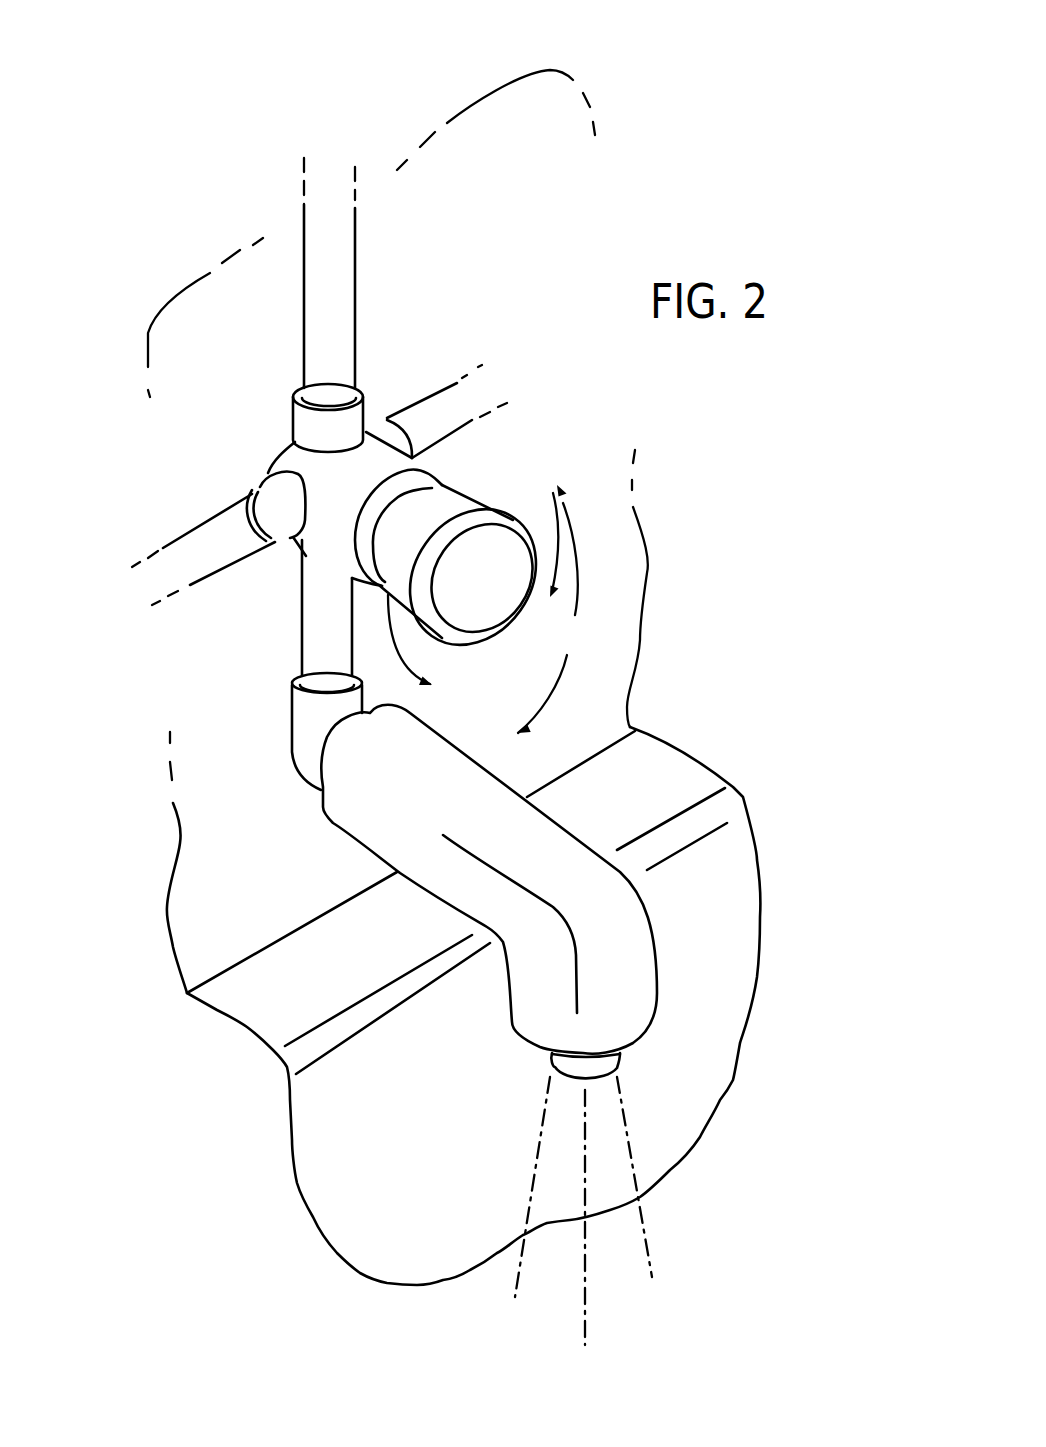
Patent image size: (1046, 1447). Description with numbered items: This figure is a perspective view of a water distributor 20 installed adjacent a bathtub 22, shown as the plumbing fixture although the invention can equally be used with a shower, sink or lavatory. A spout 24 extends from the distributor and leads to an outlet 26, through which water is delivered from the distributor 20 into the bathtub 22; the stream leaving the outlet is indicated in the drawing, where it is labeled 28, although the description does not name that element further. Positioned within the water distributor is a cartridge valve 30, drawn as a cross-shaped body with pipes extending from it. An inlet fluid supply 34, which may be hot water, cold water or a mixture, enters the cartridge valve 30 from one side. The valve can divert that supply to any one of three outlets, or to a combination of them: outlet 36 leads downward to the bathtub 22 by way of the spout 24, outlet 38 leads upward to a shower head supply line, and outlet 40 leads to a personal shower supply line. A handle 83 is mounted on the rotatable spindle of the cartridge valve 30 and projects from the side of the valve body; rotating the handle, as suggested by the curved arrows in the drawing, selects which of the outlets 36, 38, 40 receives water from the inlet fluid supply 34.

The water distributor 20 is at (207, 72).
The bathtub 22 is at (682, 765).
The spout 24 is at (630, 957).
The outlet 26 is at (557, 1062).
The water stream 28 is at (647, 1243).
The cartridge valve 30 is at (330, 520).
The inlet fluid supply 34 is at (263, 487).
The outlet 36 is at (305, 567).
The outlet 38 is at (360, 393).
The outlet 40 is at (387, 420).
The handle 83 is at (460, 502).